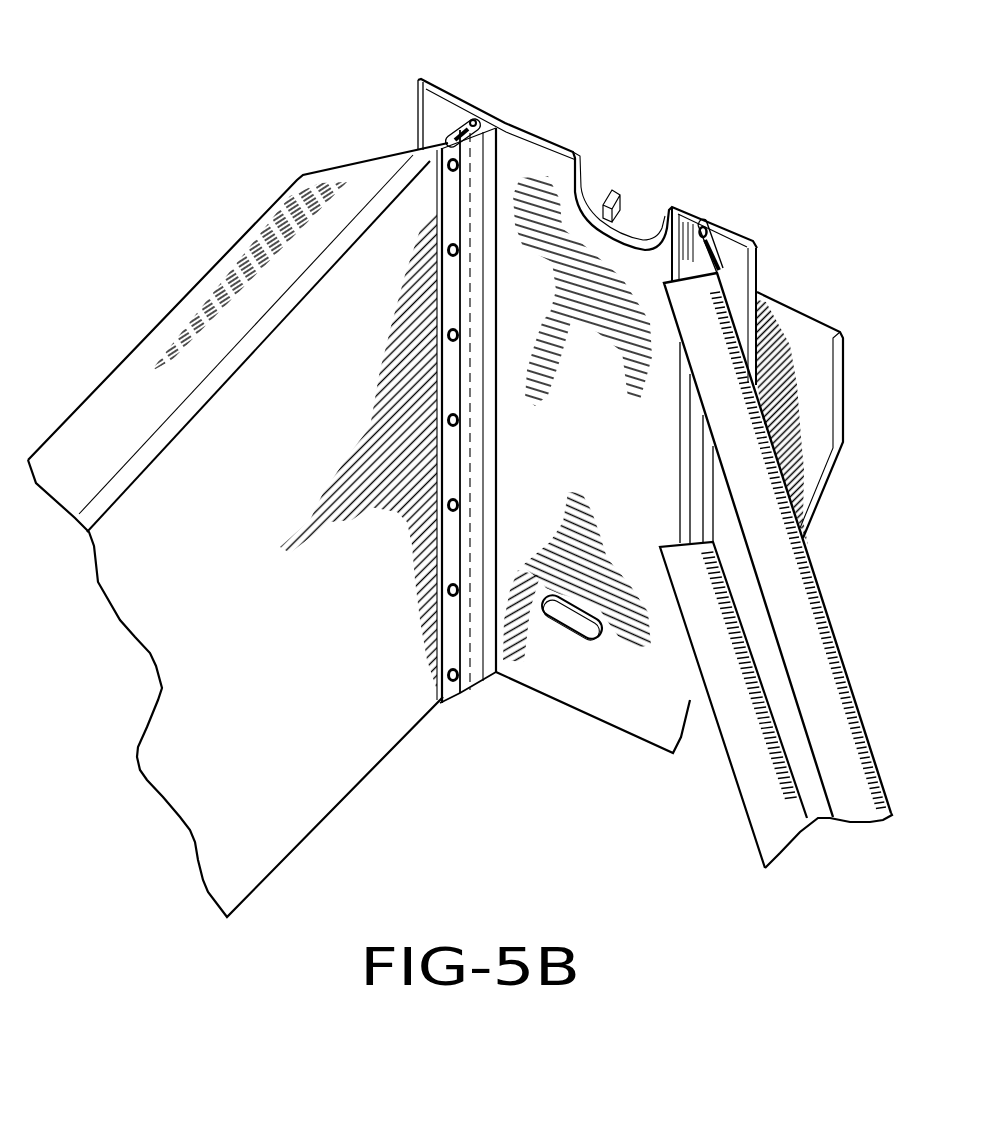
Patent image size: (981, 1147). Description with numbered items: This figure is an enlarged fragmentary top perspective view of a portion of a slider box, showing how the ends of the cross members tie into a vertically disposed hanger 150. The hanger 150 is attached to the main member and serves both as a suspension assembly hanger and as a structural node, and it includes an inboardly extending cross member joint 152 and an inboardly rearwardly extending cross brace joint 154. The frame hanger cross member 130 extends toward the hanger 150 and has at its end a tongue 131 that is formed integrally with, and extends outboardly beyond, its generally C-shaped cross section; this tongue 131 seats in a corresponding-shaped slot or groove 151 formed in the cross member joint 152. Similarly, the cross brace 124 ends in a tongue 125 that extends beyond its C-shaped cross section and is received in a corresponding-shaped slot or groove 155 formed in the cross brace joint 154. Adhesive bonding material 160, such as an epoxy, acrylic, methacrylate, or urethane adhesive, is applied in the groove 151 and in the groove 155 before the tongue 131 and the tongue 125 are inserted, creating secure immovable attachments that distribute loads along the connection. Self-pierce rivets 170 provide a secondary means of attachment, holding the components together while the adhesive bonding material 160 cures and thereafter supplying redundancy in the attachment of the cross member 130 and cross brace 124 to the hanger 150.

The cross brace 124 is at (845, 657).
The tongue 125 is at (715, 267).
The frame hanger cross member 130 is at (333, 168).
The tongue 131 is at (470, 121).
The hanger 150 is at (600, 727).
The slot or groove 151 is at (478, 119).
The cross member joint 152 is at (473, 680).
The cross brace joint 154 is at (671, 209).
The slot or groove 155 is at (700, 216).
The adhesive bonding material 160 is at (460, 134).
The self-pierce rivets 170 is at (458, 677).